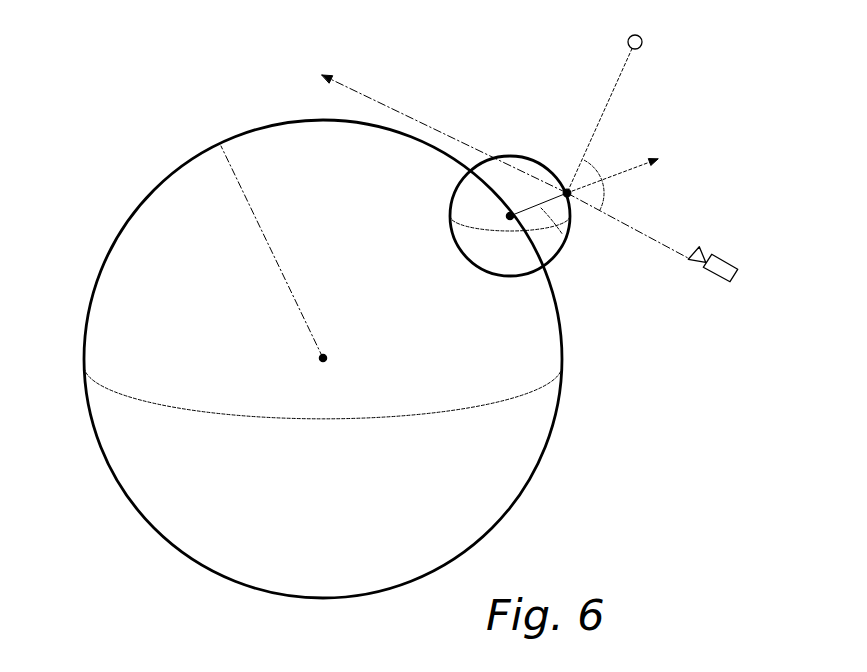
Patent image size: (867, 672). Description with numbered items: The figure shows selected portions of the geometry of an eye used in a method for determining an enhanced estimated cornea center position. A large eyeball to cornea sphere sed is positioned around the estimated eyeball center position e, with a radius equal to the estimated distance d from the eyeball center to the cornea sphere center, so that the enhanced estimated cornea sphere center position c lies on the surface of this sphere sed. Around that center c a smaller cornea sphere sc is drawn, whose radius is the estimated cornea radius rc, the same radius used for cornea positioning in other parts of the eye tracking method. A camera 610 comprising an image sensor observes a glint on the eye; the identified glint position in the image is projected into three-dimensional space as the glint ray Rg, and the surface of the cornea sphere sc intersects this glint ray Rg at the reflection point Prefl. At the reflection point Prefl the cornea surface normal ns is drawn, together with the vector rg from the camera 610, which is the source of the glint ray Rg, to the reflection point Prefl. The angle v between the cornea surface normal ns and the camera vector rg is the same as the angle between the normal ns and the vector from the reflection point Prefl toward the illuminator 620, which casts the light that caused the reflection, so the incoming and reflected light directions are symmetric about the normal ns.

The camera 610 is at (714, 282).
The illuminator 620 is at (642, 41).
The eyeball to cornea sphere sed is at (550, 435).
The estimated eyeball center position e is at (321, 360).
The estimated distance from the eyeball center to the cornea sphere center d is at (277, 261).
The cornea sphere sc is at (560, 249).
The enhanced estimated cornea sphere center position c is at (509, 218).
The estimated cornea radius rc is at (568, 196).
The reflection point Prefl is at (567, 192).
The vector from the camera rg is at (366, 22).
The cornea surface normal ns is at (648, 156).
The angle v is at (590, 162).
The glint ray Rg is at (658, 241).